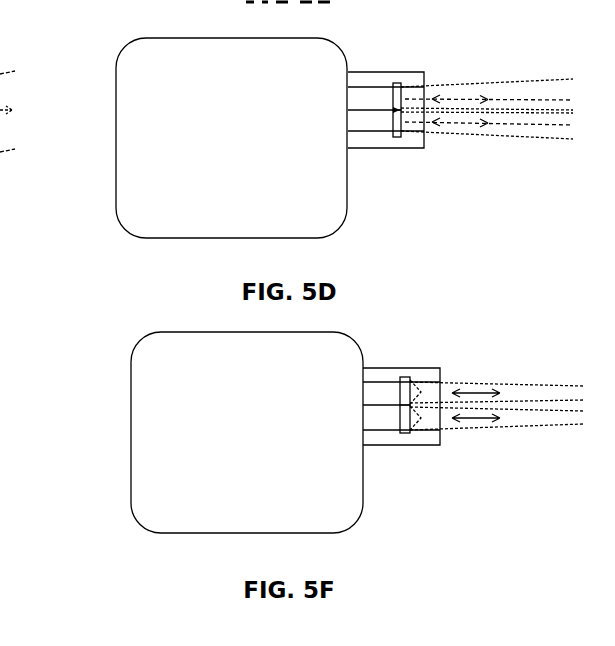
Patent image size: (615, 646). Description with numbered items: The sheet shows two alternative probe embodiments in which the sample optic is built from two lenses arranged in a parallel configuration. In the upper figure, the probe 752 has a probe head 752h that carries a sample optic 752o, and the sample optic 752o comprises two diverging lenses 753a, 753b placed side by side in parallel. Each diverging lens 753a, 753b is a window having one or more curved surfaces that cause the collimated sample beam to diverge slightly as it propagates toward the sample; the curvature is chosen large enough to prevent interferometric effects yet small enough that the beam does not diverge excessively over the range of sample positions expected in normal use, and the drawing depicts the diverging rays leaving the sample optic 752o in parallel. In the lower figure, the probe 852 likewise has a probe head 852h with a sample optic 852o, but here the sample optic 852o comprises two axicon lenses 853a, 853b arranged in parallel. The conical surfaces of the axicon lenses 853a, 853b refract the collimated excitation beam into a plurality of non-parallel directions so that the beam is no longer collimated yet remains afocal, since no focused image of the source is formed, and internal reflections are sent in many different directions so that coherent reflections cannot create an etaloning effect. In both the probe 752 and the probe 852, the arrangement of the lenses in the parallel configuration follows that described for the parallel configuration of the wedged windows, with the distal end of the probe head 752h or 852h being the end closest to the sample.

In FIG. 5D, the probe 752 is at (86, 42).
In FIG. 5D, the probe head 752h is at (205, 188).
In FIG. 5D, the sample optic 752o is at (348, 72).
In FIG. 5D, the diverging lens 753a is at (398, 88).
In FIG. 5D, the diverging lens 753b is at (395, 137).
In FIG. 5F, the probe 852 is at (108, 325).
In FIG. 5F, the probe head 852h is at (223, 481).
In FIG. 5F, the sample optic 852o is at (365, 368).
In FIG. 5F, the axicon lens 853a is at (410, 383).
In FIG. 5F, the axicon lens 853b is at (410, 433).